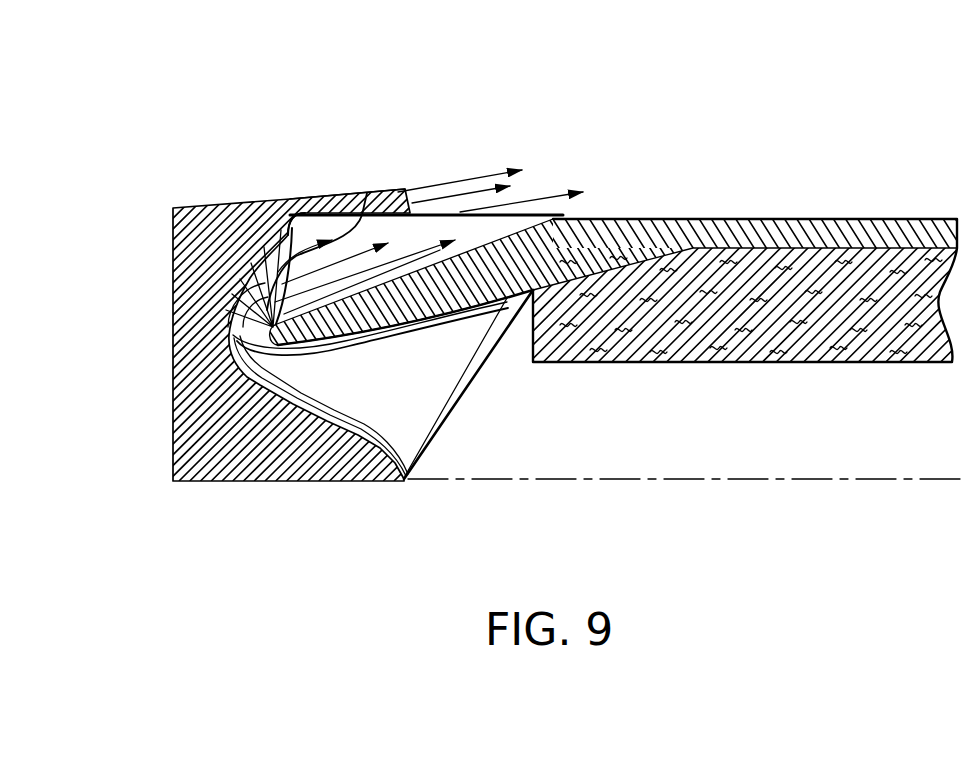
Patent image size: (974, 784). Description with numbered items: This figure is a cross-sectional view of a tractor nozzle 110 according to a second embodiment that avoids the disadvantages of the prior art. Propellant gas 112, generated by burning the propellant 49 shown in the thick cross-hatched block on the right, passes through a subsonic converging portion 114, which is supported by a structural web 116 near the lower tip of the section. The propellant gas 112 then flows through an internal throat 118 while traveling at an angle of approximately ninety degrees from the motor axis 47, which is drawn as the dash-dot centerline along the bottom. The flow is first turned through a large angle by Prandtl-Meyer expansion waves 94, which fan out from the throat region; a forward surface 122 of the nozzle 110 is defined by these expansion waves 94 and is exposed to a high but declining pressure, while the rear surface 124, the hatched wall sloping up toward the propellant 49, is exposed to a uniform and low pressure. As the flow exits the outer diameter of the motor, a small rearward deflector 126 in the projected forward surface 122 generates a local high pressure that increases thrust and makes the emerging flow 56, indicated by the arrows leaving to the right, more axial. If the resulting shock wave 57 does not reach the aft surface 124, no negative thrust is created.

The nozzle 110 is at (436, 158).
The rearward deflector 126 is at (383, 190).
The Prandtl-Meyer expansion waves 94 is at (367, 193).
The emerging flow 56 is at (478, 165).
The forward surface 122 is at (290, 205).
The rear surface 124 is at (500, 245).
The shock wave 57 is at (547, 214).
The internal throat 118 is at (275, 326).
The subsonic converging portion 114 is at (424, 417).
The propellant gas 112 is at (430, 383).
The propellant 49 is at (741, 363).
The structural web 116 is at (415, 446).
The motor axis 47 is at (600, 480).